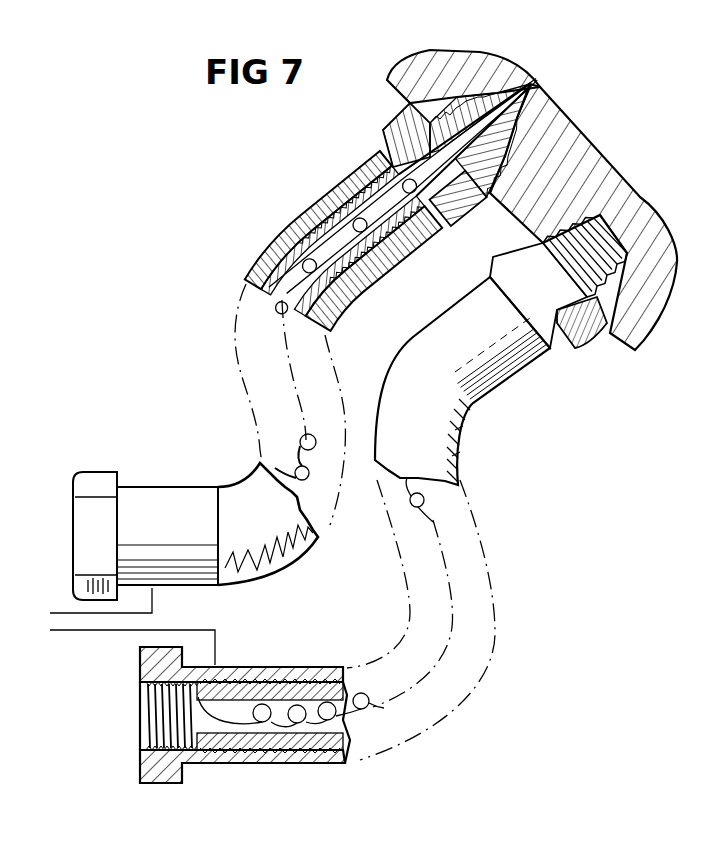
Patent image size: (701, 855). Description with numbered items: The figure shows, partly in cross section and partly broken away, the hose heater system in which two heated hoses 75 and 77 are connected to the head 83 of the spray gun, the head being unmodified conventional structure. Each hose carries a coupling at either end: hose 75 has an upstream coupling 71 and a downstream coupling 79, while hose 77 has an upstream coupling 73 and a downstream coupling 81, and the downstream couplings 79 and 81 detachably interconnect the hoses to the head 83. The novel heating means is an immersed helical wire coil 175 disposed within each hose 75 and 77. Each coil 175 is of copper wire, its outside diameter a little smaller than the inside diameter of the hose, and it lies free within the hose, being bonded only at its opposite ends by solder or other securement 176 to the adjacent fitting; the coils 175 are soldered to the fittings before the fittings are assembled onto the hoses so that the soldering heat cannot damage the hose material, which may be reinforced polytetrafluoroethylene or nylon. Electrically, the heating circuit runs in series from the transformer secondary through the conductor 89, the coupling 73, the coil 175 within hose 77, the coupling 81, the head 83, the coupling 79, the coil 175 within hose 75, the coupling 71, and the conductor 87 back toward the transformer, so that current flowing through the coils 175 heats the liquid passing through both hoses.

The coupling 71 is at (155, 762).
The coupling 73 is at (102, 482).
The heated hose 75 is at (463, 437).
The heated hose 77 is at (270, 255).
The coupling 79 is at (587, 340).
The coupling 81 is at (396, 126).
The head 83 is at (580, 147).
The conductor 87 is at (218, 641).
The conductor 89 is at (155, 603).
The wire coil 175 is at (292, 468).
The securement 176 is at (538, 88).